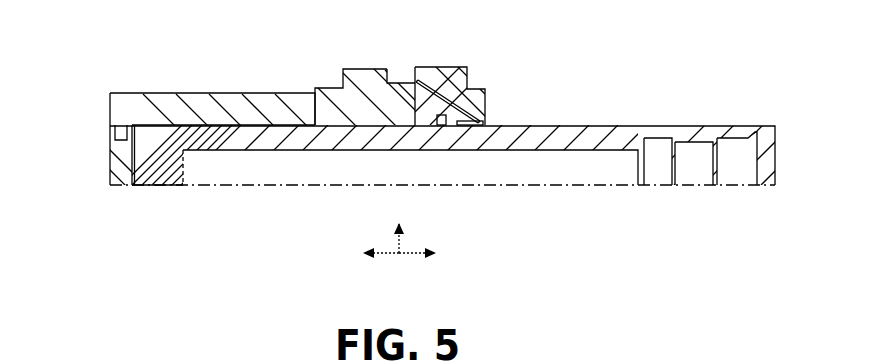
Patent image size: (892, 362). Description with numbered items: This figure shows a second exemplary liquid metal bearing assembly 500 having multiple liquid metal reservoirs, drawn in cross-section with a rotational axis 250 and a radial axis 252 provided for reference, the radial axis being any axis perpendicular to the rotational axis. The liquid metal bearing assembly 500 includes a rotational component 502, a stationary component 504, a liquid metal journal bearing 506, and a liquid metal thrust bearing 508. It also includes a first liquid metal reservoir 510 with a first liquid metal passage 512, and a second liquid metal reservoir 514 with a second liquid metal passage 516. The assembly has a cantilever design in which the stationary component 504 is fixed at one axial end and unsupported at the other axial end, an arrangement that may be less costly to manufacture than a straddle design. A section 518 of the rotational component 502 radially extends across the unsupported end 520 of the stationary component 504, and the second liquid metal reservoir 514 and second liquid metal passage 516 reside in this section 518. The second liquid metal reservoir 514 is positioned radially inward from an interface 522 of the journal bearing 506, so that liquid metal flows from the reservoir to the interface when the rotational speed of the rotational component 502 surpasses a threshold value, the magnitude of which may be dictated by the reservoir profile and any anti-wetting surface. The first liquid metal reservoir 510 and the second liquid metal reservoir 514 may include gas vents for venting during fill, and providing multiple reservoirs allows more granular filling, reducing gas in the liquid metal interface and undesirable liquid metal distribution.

The liquid metal bearing assembly 500 is at (755, 41).
The rotational component 502 is at (133, 107).
The stationary component 504 is at (225, 152).
The liquid metal journal bearing 506 is at (298, 118).
The liquid metal thrust bearing 508 is at (404, 70).
The first liquid metal reservoir 510 is at (484, 124).
The first liquid metal passage 512 is at (454, 91).
The second liquid metal reservoir 514 is at (107, 126).
The second liquid metal passage 516 is at (132, 124).
The section 518 is at (97, 160).
The unsupported end 520 is at (142, 196).
The interface 522 is at (162, 118).
The rotational axis 250 is at (420, 255).
The radial axis 252 is at (400, 237).